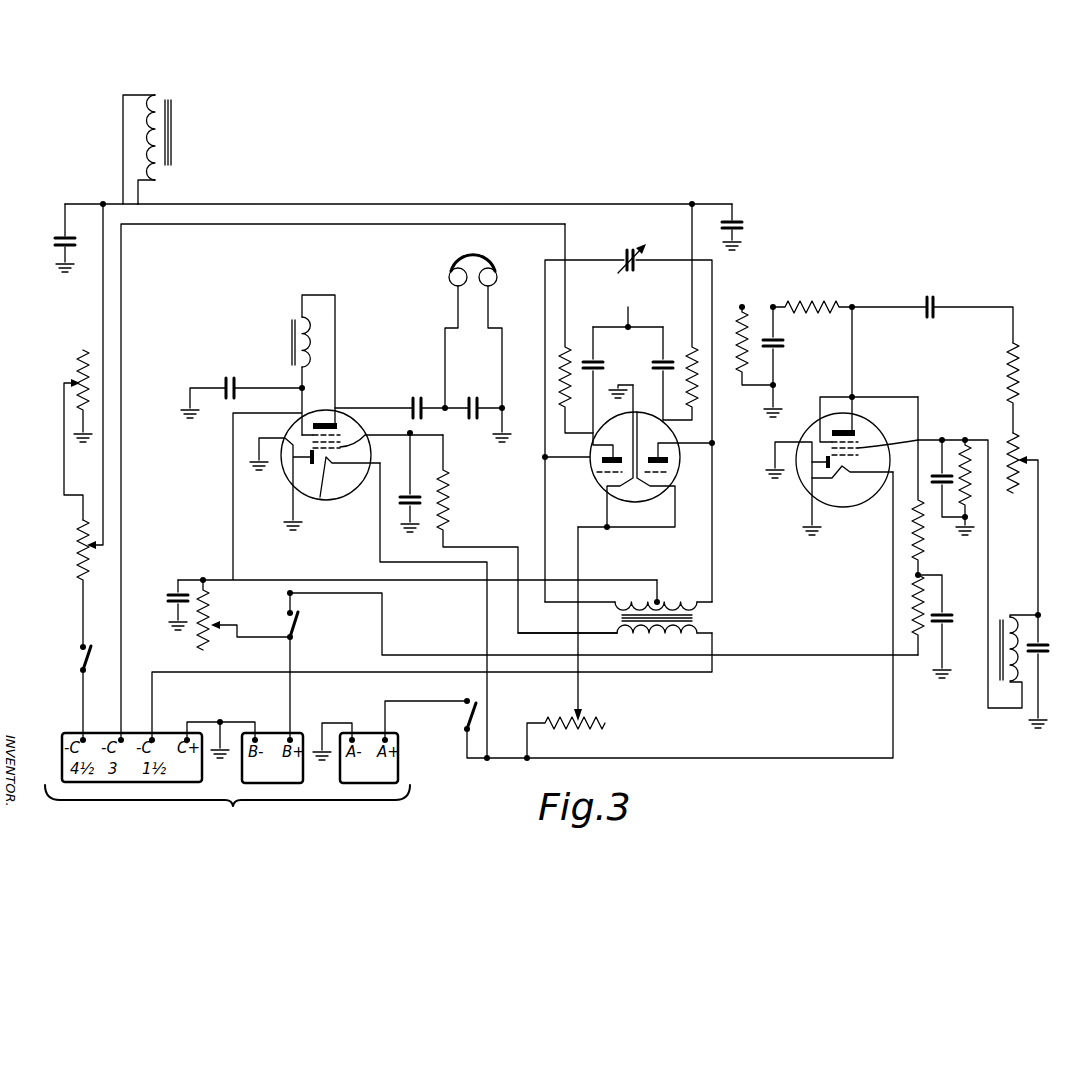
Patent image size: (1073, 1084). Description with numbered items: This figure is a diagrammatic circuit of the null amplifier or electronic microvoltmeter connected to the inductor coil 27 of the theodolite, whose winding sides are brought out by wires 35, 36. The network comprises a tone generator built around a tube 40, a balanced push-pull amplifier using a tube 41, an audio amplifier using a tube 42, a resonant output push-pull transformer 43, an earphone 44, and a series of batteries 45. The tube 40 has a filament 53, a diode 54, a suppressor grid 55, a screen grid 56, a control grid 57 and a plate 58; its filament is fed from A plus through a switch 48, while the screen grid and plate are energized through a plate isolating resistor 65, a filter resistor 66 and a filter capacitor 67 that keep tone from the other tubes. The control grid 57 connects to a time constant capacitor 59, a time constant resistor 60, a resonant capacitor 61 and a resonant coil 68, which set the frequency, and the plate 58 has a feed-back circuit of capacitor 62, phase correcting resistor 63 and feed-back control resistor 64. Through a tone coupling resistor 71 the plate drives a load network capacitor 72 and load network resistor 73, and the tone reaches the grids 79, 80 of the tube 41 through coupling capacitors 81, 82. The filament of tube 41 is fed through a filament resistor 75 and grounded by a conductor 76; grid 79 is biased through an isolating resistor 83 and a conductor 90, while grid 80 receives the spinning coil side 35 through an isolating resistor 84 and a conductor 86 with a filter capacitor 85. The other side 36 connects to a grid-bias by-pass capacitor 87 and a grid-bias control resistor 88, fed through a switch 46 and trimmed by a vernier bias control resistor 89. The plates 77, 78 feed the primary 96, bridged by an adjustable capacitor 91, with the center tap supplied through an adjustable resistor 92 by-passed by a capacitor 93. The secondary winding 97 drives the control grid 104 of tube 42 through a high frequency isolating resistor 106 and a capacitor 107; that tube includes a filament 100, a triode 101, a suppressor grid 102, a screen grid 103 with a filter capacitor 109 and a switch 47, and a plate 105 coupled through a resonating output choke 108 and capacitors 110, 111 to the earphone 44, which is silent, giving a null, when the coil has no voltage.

The inductor coil 27 is at (153, 138).
The wire 35 is at (158, 181).
The wire 36 is at (158, 96).
The tube 40 is at (813, 431).
The tube 41 is at (637, 503).
The tube 42 is at (346, 497).
The resonant output push-pull transformer 43 is at (620, 618).
The earphone 44 is at (449, 278).
The series of batteries 45 is at (242, 833).
The switch 46 is at (80, 659).
The switch 47 is at (298, 622).
The switch 48 is at (465, 715).
The filament 53 is at (846, 474).
The diode 54 is at (826, 465).
The suppressor grid 55 is at (860, 440).
The screen grid 56 is at (862, 446).
The control grid 57 is at (860, 456).
The plate 58 is at (855, 426).
The time constant capacitor 59 is at (947, 470).
The time constant resistor 60 is at (976, 493).
The resonant capacitor 61 is at (1013, 624).
The capacitor 62 is at (936, 300).
The phase correcting resistor 63 is at (1021, 363).
The feed-back control resistor 64 is at (1027, 441).
The plate isolating resistor 65 is at (923, 547).
The filter resistor 66 is at (922, 652).
The filter capacitor 67 is at (948, 610).
The resonant coil 68 is at (1022, 690).
The tone coupling resistor 71 is at (816, 301).
The load network capacitor 72 is at (781, 347).
The load network resistor 73 is at (738, 344).
The filament resistor 75 is at (593, 716).
The conductor 76 is at (635, 405).
The plate 77 is at (616, 455).
The plate 78 is at (653, 455).
The grid 79 is at (601, 474).
The grid 80 is at (667, 472).
The coupling capacitor 81 is at (600, 361).
The coupling capacitor 82 is at (657, 361).
The isolating resistor 83 is at (569, 349).
The isolating resistor 84 is at (702, 396).
The filter capacitor 85 is at (738, 220).
The conductor 86 is at (646, 204).
The grid-bias by-pass capacitor 87 is at (63, 236).
The grid-bias control resistor 88 is at (78, 538).
The vernier bias control resistor 89 is at (78, 362).
The conductor 90 is at (247, 224).
The adjustable capacitor 91 is at (632, 249).
The adjustable resistor 92 is at (213, 606).
The capacitor 93 is at (170, 597).
The primary 96 is at (663, 600).
The secondary winding 97 is at (656, 638).
The filament 100 is at (321, 498).
The triode 101 is at (311, 460).
The suppressor grid 102 is at (343, 432).
The screen grid 103 is at (356, 432).
The control grid 104 is at (366, 440).
The plate 105 is at (333, 421).
The high frequency isolating resistor 106 is at (450, 499).
The capacitor 107 is at (405, 494).
The resonating output choke 108 is at (297, 318).
The filter capacitor 109 is at (233, 377).
The capacitor 110 is at (417, 396).
The capacitor 111 is at (474, 396).